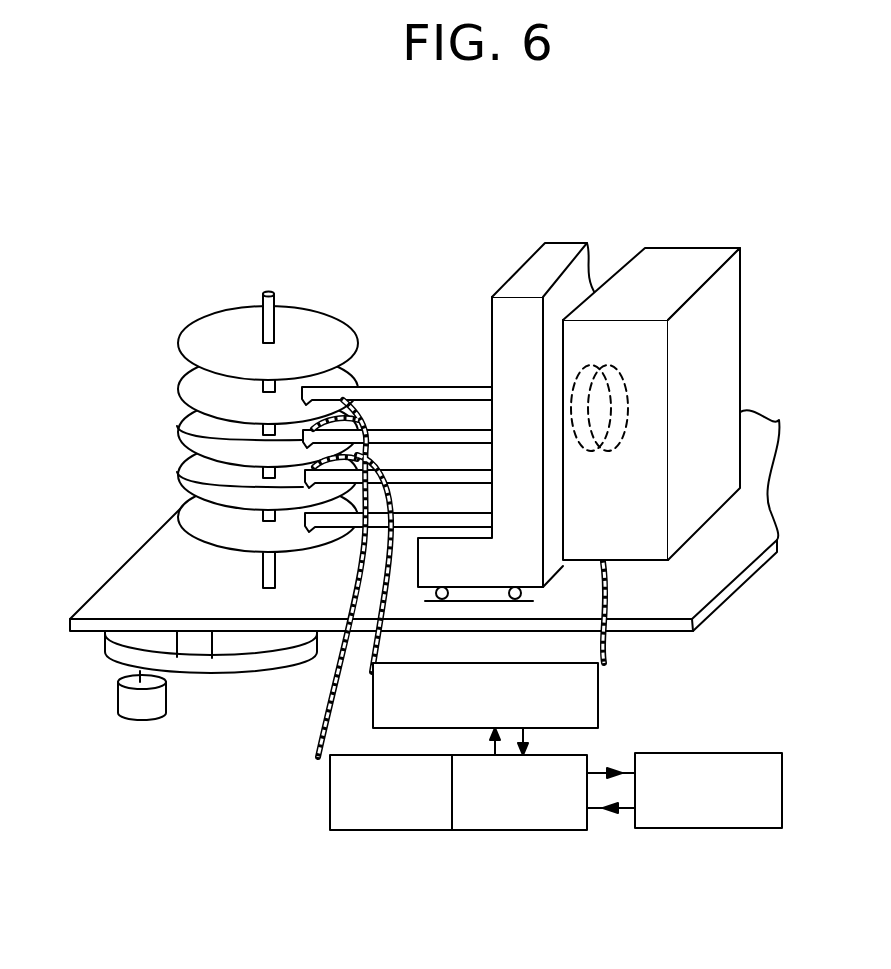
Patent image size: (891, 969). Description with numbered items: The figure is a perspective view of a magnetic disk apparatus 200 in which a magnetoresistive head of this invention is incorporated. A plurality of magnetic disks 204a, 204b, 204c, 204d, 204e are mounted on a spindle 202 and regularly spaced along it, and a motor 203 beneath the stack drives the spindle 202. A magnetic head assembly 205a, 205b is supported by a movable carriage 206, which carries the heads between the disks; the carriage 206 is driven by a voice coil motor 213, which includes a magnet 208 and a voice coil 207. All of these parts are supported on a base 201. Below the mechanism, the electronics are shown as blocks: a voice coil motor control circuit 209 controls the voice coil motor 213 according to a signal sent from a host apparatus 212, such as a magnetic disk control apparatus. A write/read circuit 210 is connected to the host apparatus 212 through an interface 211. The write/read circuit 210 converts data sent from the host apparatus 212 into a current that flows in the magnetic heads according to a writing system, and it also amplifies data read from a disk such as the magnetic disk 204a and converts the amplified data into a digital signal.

The magnetic disk apparatus 200 is at (451, 240).
The base 201 is at (668, 623).
The spindle 202 is at (265, 293).
The motor 203 is at (165, 703).
The magnetic disk 204a is at (316, 322).
The magnetic disk 204b is at (343, 380).
The magnetic disk 204c is at (187, 418).
The magnetic disk 204d is at (197, 468).
The magnetic disk 204e is at (197, 523).
The magnetic head assembly 205a is at (190, 484).
The magnetic head assembly 205b is at (188, 432).
The carriage 206 is at (562, 255).
The voice coil 207 is at (623, 417).
The magnet 208 is at (672, 263).
The voice coil motor control circuit 209 is at (600, 708).
The write/read circuit 210 is at (387, 832).
The interface 211 is at (523, 832).
The host apparatus 212 is at (705, 830).
The voice coil motor 213 is at (650, 387).